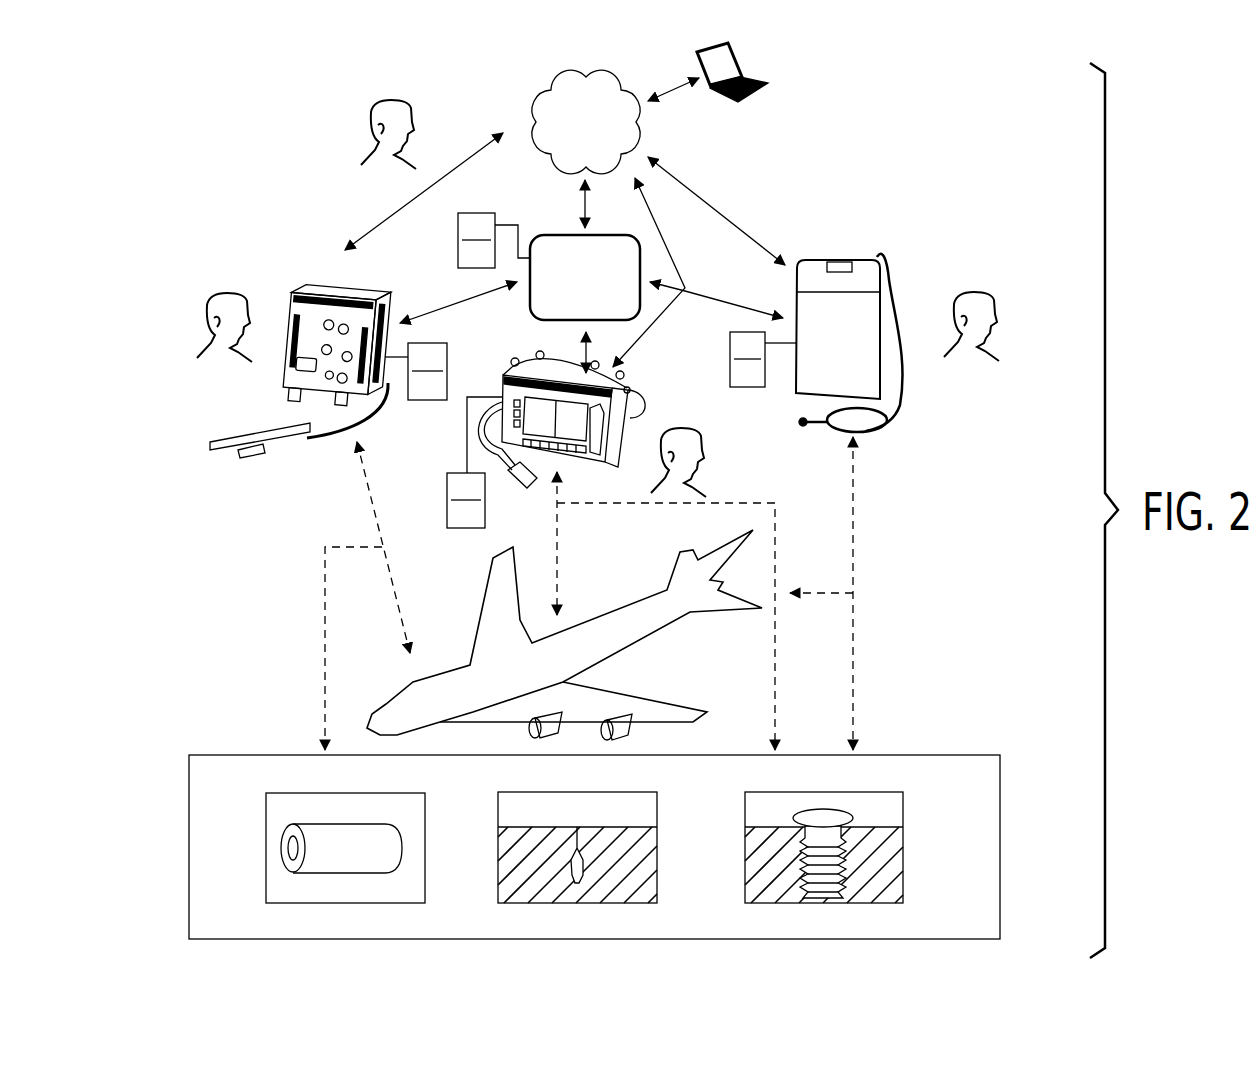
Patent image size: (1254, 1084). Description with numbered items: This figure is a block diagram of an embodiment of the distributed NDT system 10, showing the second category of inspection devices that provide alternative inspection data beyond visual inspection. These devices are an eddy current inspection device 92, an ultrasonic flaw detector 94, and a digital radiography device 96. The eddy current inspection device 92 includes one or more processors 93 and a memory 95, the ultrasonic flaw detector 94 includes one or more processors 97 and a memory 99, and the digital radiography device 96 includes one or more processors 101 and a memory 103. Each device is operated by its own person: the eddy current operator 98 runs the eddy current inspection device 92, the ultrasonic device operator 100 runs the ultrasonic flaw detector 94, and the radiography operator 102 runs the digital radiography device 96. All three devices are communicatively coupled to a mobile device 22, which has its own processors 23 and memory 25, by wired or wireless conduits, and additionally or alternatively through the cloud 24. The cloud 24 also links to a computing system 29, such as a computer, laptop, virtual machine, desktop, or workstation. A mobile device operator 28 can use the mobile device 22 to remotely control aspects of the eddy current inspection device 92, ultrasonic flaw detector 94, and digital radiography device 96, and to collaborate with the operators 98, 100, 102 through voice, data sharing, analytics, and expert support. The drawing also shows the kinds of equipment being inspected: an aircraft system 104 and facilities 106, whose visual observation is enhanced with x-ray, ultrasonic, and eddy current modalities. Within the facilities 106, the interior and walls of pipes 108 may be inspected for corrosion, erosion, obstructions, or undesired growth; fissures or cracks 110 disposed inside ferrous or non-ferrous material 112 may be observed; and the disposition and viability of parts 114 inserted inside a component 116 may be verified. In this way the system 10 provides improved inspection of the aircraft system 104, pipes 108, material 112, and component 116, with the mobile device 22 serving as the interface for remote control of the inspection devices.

The distributed NDT system 10 is at (825, 104).
The mobile device 22 is at (567, 233).
The processors 23 is at (457, 253).
The cloud 24 is at (545, 93).
The memory 25 is at (457, 262).
The mobile device operator 28 is at (402, 102).
The computing system 29 is at (715, 100).
The eddy current inspection device 92 is at (315, 280).
The processors 93 is at (447, 357).
The ultrasonic flaw detector 94 is at (628, 387).
The memory 95 is at (447, 400).
The digital radiography device 96 is at (838, 258).
The processors 97 is at (447, 488).
The eddy current operator 98 is at (238, 292).
The memory 99 is at (485, 513).
The ultrasonic device operator 100 is at (692, 428).
The processors 101 is at (730, 345).
The radiography operator 102 is at (984, 292).
The memory 103 is at (730, 370).
The aircraft system 104 is at (635, 607).
The facilities 106 is at (1000, 846).
The pipes 108 is at (425, 847).
The cracks 110 is at (577, 830).
The material 112 is at (603, 847).
The parts 114 is at (822, 810).
The component 116 is at (849, 830).